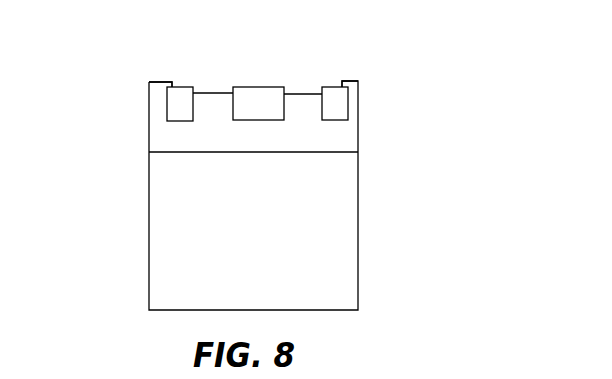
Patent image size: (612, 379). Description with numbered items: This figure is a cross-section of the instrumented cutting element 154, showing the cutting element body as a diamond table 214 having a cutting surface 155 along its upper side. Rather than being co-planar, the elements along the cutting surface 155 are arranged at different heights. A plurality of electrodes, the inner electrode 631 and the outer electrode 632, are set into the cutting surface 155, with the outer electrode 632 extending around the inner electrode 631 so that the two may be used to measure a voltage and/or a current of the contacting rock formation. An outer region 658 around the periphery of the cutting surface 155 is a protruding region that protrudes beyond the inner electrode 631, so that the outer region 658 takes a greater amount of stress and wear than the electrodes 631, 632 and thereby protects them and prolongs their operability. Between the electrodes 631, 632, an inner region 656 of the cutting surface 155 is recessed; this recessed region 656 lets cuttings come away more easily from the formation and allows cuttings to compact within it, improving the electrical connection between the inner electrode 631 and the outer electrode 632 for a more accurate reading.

The instrumented cutting element 154 is at (452, 100).
The cutting surface 155 is at (152, 83).
The diamond table 214 is at (349, 135).
The inner electrode 631 is at (266, 93).
The outer electrode 632 is at (185, 92).
The inner region 656 is at (222, 92).
The outer region 658 is at (153, 98).